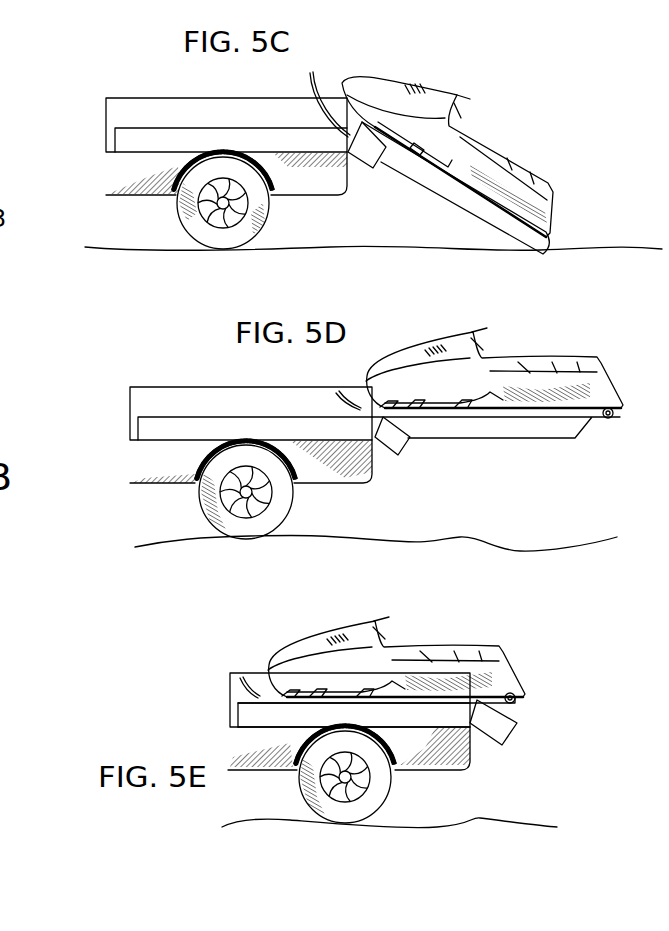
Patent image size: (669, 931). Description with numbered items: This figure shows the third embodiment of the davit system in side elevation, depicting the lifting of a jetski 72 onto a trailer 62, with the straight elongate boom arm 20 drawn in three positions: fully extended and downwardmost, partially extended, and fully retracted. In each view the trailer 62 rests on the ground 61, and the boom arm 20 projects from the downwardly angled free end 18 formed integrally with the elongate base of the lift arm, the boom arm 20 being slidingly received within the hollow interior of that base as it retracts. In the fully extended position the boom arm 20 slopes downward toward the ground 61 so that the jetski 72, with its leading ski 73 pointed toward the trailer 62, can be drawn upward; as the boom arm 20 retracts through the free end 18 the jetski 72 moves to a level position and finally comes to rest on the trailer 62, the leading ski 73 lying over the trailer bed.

In FIG. 5C, the downwardly angled free end 18 is at (361, 168).
In FIG. 5D, the downwardly angled free end 18 is at (395, 456).
In FIG. 5E, the downwardly angled free end 18 is at (493, 748).
In FIG. 5C, the elongate boom arm 20 is at (426, 188).
In FIG. 5D, the elongate boom arm 20 is at (505, 440).
In FIG. 5E, the elongate boom arm 20 is at (258, 723).
In FIG. 5C, the ground 61 is at (352, 247).
In FIG. 5D, the ground 61 is at (460, 537).
In FIG. 5E, the ground 61 is at (525, 823).
In FIG. 5C, the trailer 62 is at (300, 189).
In FIG. 5D, the trailer 62 is at (196, 467).
In FIG. 5E, the trailer 62 is at (416, 752).
In FIG. 5C, the jetski 72 is at (424, 145).
In FIG. 5D, the jetski 72 is at (452, 392).
In FIG. 5E, the jetski 72 is at (362, 668).
In FIG. 5C, the leading ski 73 is at (306, 73).
In FIG. 5D, the leading ski 73 is at (336, 394).
In FIG. 5E, the leading ski 73 is at (228, 673).